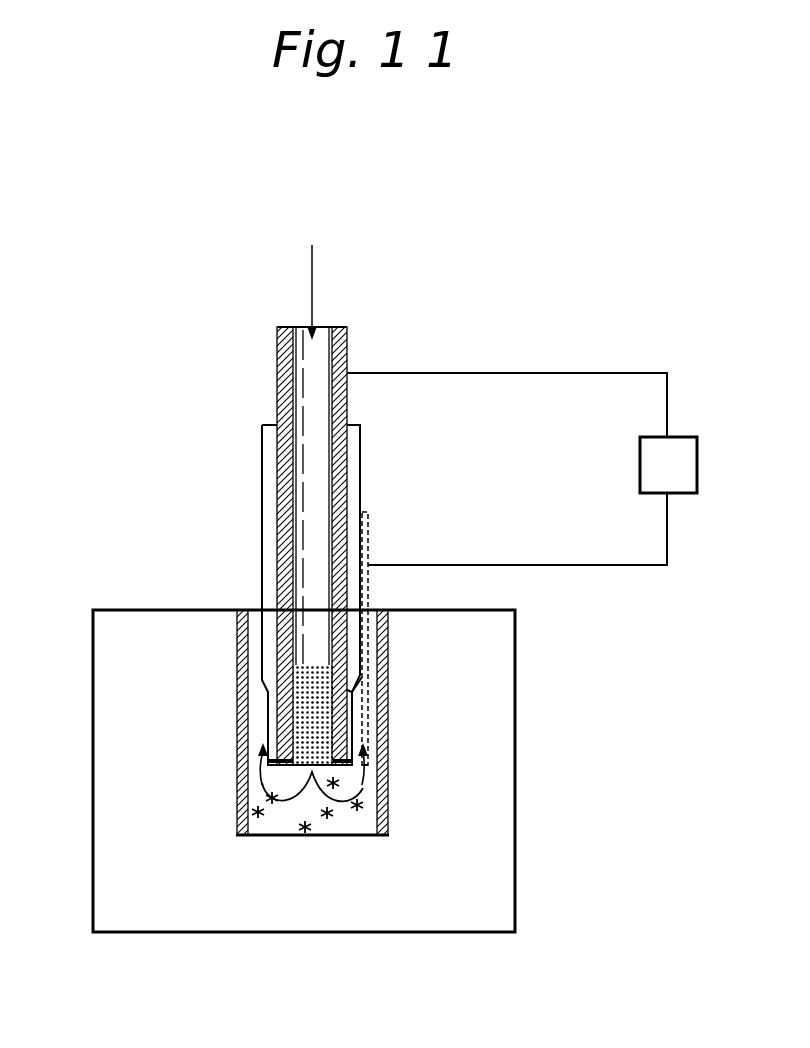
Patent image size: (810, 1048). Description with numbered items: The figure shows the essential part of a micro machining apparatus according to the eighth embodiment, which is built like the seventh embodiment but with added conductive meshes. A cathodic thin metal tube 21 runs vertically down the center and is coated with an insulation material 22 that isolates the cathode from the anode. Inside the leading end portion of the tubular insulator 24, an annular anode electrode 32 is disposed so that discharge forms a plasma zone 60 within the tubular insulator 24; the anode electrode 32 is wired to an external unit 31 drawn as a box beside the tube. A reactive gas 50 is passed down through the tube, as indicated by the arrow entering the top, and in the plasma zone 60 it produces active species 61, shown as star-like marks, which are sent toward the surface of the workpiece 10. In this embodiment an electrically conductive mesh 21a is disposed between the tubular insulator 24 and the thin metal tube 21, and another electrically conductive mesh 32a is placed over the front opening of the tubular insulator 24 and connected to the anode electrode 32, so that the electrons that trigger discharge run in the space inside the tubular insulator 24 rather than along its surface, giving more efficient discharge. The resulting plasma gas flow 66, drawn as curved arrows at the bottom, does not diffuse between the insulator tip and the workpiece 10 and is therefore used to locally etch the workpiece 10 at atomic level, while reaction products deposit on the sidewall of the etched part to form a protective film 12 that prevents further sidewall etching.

The workpiece 10 is at (500, 915).
The protective film 12 is at (237, 712).
The thin metal tube 21 is at (366, 348).
The electrically conductive mesh 21a is at (352, 686).
The insulation material 22 is at (270, 551).
The tubular insulator 24 is at (300, 728).
The power source 31 is at (685, 472).
The anode electrode 32 is at (368, 632).
The electrically conductive mesh 32a is at (355, 772).
The reactive gas 50 is at (314, 275).
The plasma zone 60 is at (300, 730).
The active species 61 is at (333, 815).
The plasma gas flow 66 is at (237, 795).